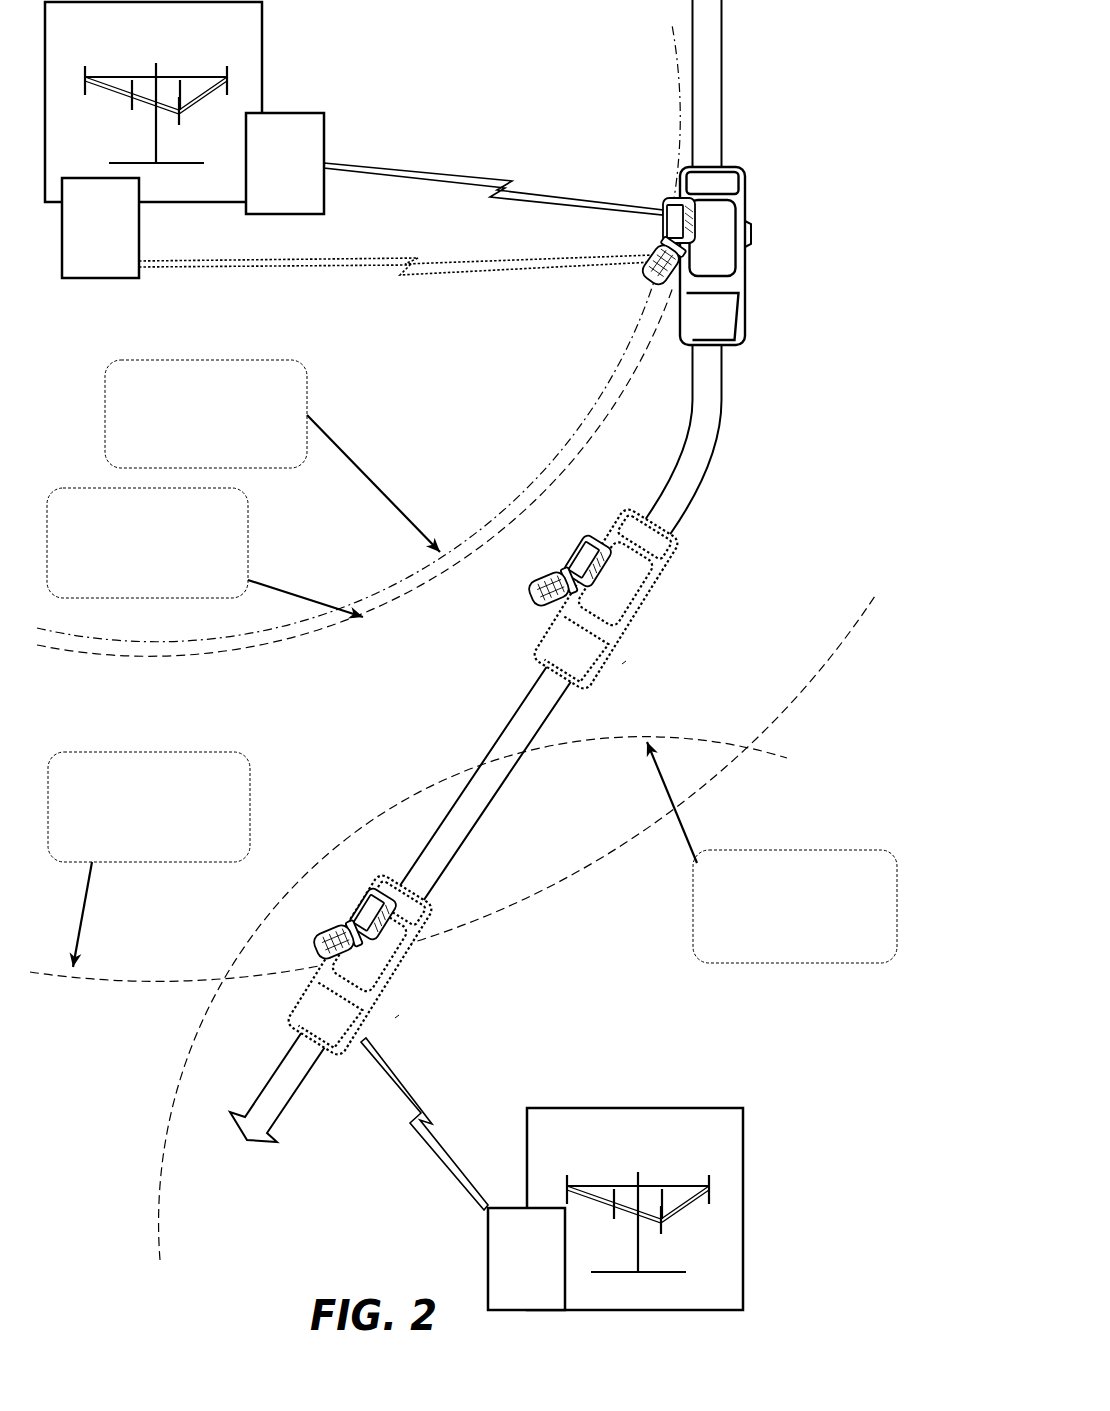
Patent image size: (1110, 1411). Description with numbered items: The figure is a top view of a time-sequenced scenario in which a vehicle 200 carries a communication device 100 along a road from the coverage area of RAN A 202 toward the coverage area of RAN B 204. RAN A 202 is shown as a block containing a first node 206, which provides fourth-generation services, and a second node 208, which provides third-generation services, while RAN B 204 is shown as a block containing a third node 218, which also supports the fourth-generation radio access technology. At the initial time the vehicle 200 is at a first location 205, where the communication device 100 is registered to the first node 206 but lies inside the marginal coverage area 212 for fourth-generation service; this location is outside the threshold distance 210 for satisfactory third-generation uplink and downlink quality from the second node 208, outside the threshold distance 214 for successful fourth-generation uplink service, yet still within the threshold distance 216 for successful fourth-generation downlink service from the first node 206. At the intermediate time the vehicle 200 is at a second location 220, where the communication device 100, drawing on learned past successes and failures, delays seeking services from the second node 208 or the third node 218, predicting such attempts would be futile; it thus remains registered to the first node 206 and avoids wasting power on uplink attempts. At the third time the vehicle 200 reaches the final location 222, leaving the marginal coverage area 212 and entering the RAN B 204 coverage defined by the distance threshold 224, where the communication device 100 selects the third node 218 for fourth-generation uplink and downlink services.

The communication device 100 is at (670, 200).
The vehicle 200 is at (745, 198).
The RAN A 202 is at (212, 56).
The RAN B 204 is at (692, 1165).
The first location 205 is at (747, 260).
The node 1 206 is at (300, 206).
The node 2 208 is at (117, 268).
The threshold distance 210 is at (297, 440).
The marginal coverage area 212 is at (843, 488).
The threshold distance 214 is at (225, 568).
The threshold distance 216 is at (225, 831).
The node 3 218 is at (545, 1298).
The second location 220 is at (622, 664).
The final location 222 is at (395, 1018).
The distance threshold 224 is at (886, 931).